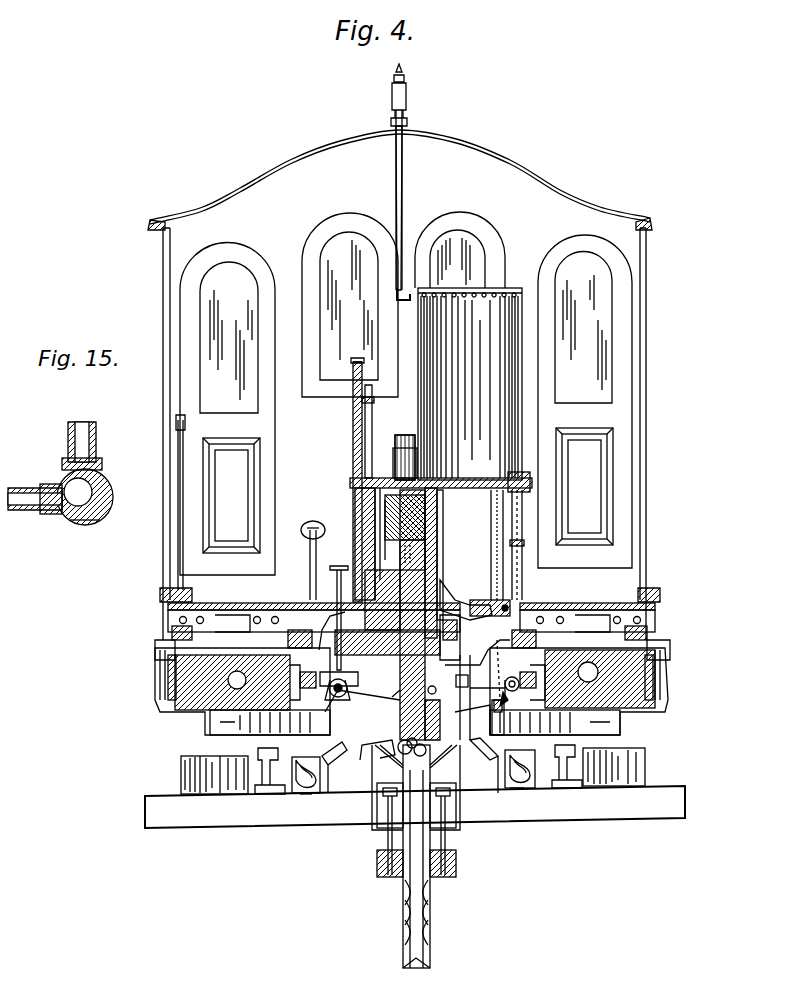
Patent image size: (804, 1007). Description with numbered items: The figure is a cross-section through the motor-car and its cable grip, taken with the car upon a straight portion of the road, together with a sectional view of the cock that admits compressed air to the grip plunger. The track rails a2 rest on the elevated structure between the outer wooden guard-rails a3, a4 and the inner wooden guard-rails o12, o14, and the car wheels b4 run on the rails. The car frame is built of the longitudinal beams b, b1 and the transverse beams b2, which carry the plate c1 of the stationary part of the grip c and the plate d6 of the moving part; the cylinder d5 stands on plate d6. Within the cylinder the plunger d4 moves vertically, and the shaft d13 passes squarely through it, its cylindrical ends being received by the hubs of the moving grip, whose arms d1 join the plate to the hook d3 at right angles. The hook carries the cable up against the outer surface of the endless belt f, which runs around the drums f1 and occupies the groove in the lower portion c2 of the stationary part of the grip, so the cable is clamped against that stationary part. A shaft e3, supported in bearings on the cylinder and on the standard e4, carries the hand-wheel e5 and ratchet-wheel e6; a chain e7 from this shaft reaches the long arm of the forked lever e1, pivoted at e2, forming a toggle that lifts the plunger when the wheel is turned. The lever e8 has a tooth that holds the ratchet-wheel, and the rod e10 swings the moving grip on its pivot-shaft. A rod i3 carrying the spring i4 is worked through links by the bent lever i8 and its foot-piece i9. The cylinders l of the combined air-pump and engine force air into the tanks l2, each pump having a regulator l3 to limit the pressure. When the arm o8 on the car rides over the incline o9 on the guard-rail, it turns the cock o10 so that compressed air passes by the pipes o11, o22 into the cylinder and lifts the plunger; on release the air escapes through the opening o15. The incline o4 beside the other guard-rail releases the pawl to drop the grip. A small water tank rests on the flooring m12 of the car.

In FIG. 4, the tanks l2 is at (470, 384).
In FIG. 4, the hand-wheel e5 is at (352, 430).
In FIG. 4, the ratchet-wheel e6 is at (375, 408).
In FIG. 4, the endless belt f is at (402, 432).
In FIG. 4, the drums f1 is at (393, 446).
In FIG. 4, the shaft e3 is at (460, 480).
In FIG. 4, the plunger d4 is at (438, 535).
In FIG. 4, the shaft d13 is at (440, 500).
In FIG. 4, the chain e7 is at (495, 505).
In FIG. 4, the standard e4 is at (524, 523).
In FIG. 4, the cylinder d5 is at (438, 560).
In FIG. 4, the pivot e2 is at (466, 593).
In FIG. 4, the forked lever e1 is at (490, 596).
In FIG. 4, the arms d1 is at (400, 672).
In FIG. 4, the plate d6 is at (458, 630).
In FIG. 4, the transverse beams b2 is at (477, 649).
In FIG. 4, the plate c1 is at (453, 697).
In FIG. 4, the pivot c is at (434, 697).
In FIG. 4, the sleeve c2 is at (440, 720).
In FIG. 4, the arm o8 is at (464, 723).
In FIG. 4, the pipe o11 is at (515, 683).
In FIG. 15, the pipe o11 is at (91, 446).
In FIG. 4, the cock o10 is at (506, 680).
In FIG. 15, the cock o10 is at (93, 497).
In FIG. 4, the inner wooden guard-rail o14 is at (508, 802).
In FIG. 4, the pipe o22 is at (489, 696).
In FIG. 15, the pipe o22 is at (35, 489).
In FIG. 4, the flooring m12 is at (228, 608).
In FIG. 4, the longitudinal beams b1 is at (292, 630).
In FIG. 4, the longitudinal beams b is at (170, 634).
In FIG. 4, the cylinders l is at (240, 655).
In FIG. 4, the rod e10 is at (319, 560).
In FIG. 4, the foot-piece i9 is at (339, 572).
In FIG. 4, the lever e8 is at (360, 596).
In FIG. 4, the bent lever i8 is at (340, 670).
In FIG. 4, the spring i4 is at (344, 683).
In FIG. 4, the rod i3 is at (342, 690).
In FIG. 4, the regulator l3 is at (330, 748).
In FIG. 4, the hook portion d3 is at (400, 745).
In FIG. 4, the incline o4 is at (340, 755).
In FIG. 4, the incline o9 is at (484, 750).
In FIG. 4, the rails a2 is at (272, 794).
In FIG. 4, the outer wooden guard-rail a4 is at (200, 775).
In FIG. 4, the outer wooden guard-rail a3 is at (624, 767).
In FIG. 4, the wheels b4 is at (418, 769).
In FIG. 4, the inner wooden guard-rail o12 is at (306, 794).
In FIG. 15, the opening o15 is at (68, 524).